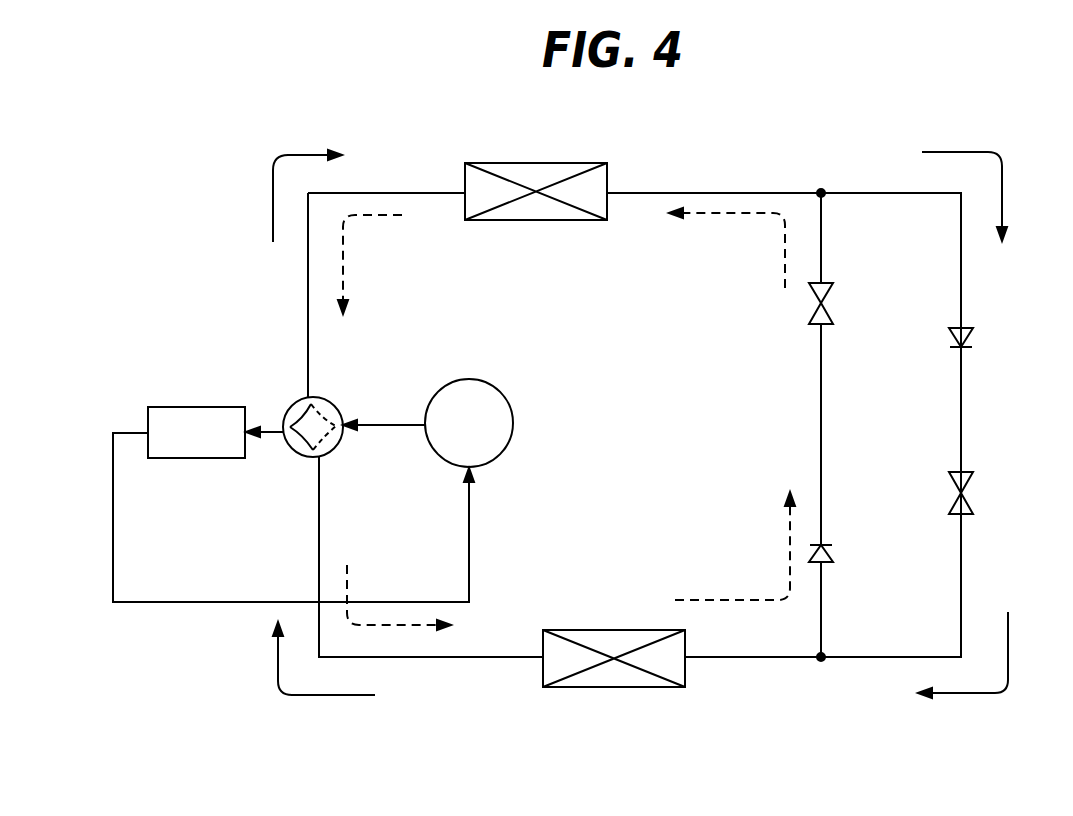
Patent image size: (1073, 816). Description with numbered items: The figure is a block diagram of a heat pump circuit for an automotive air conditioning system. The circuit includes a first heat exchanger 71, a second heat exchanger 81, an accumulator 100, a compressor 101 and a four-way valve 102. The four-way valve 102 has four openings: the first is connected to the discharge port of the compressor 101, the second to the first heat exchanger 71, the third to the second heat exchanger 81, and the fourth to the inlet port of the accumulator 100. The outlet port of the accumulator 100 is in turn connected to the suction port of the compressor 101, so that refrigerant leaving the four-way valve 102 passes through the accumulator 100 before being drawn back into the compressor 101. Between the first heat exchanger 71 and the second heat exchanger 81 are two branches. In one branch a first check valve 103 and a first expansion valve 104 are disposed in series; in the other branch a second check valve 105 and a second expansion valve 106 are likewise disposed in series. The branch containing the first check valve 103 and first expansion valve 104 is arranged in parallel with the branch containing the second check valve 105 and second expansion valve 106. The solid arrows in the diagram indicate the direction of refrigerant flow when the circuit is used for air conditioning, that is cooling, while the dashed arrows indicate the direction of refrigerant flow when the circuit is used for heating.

The first heat exchanger 71 is at (592, 163).
The second heat exchanger 81 is at (672, 685).
The accumulator 100 is at (232, 457).
The compressor 101 is at (506, 411).
The four-way valve 102 is at (333, 405).
The first check valve 103 is at (966, 335).
The first expansion valve 104 is at (968, 500).
The second check valve 105 is at (826, 298).
The second expansion valve 106 is at (830, 553).